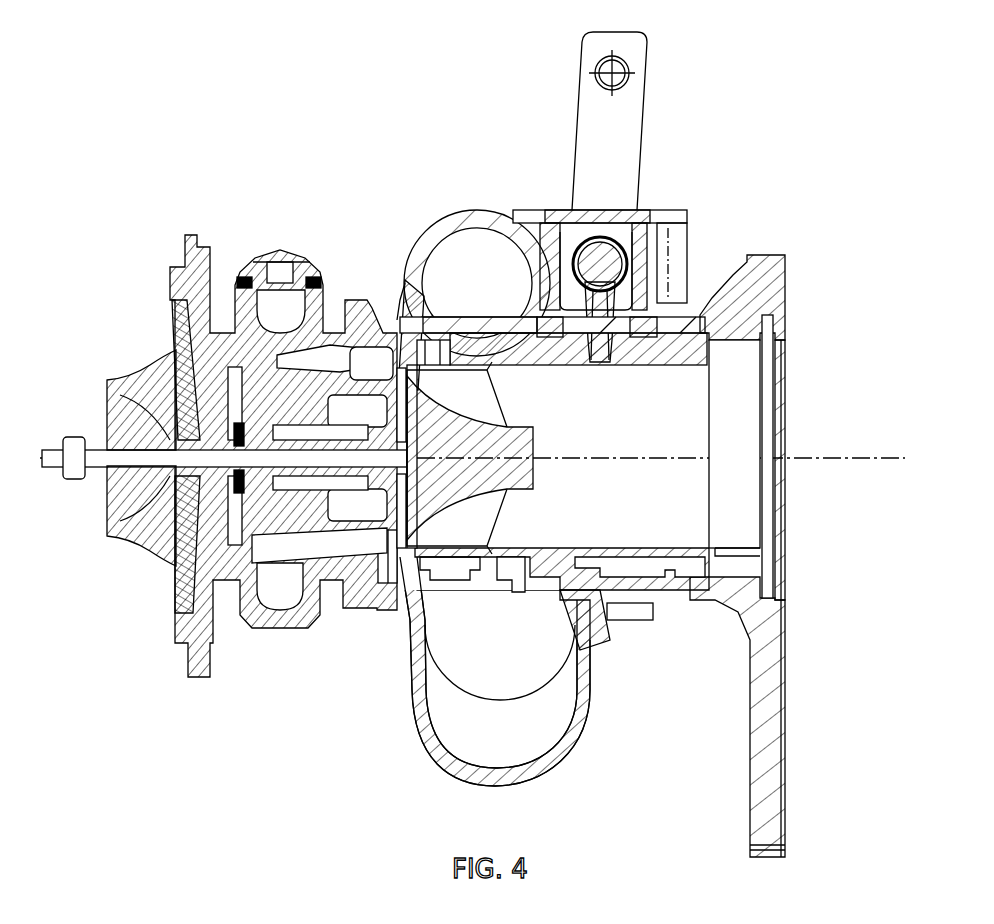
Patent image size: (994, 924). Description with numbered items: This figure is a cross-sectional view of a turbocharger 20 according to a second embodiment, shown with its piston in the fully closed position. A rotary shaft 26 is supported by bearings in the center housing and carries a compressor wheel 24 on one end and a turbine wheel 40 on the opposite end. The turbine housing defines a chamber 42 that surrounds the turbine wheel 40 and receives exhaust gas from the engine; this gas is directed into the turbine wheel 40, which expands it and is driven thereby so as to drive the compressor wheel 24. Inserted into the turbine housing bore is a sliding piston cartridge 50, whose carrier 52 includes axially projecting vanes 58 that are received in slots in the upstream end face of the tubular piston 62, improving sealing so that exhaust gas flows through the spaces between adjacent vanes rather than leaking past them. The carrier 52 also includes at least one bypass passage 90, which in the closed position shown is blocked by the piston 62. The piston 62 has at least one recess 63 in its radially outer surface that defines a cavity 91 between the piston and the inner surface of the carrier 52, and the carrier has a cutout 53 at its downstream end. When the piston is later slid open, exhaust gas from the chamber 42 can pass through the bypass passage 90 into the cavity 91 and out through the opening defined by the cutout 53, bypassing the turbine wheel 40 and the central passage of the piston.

The turbocharger 20 is at (710, 178).
The compressor wheel 24 is at (120, 392).
The rotary shaft 26 is at (95, 447).
The turbine wheel 40 is at (497, 492).
The chamber 42 is at (468, 727).
The sliding piston cartridge 50 is at (750, 346).
The carrier 52 is at (716, 327).
The cutout 53 is at (735, 480).
The vanes 58 is at (463, 548).
The piston 62 is at (690, 352).
The recess 63 is at (618, 563).
The bypass passage 90 is at (520, 594).
The cavity 91 is at (597, 567).